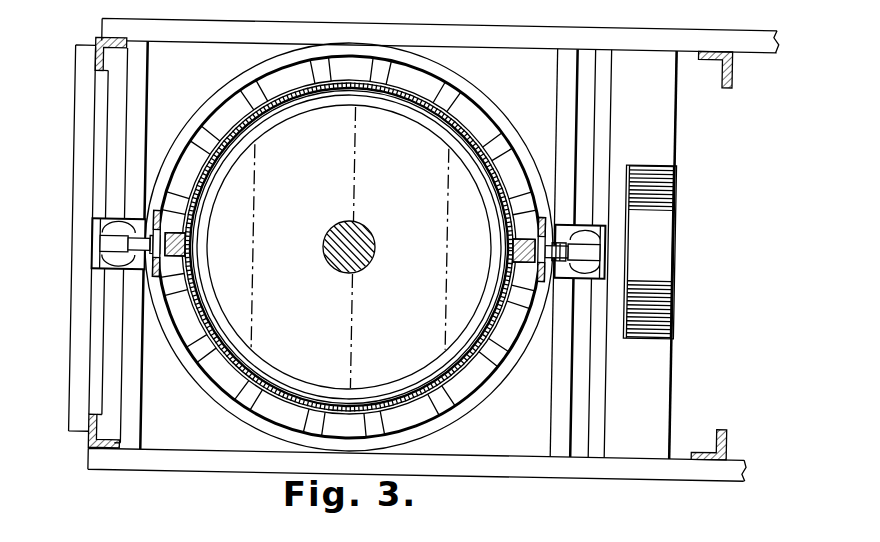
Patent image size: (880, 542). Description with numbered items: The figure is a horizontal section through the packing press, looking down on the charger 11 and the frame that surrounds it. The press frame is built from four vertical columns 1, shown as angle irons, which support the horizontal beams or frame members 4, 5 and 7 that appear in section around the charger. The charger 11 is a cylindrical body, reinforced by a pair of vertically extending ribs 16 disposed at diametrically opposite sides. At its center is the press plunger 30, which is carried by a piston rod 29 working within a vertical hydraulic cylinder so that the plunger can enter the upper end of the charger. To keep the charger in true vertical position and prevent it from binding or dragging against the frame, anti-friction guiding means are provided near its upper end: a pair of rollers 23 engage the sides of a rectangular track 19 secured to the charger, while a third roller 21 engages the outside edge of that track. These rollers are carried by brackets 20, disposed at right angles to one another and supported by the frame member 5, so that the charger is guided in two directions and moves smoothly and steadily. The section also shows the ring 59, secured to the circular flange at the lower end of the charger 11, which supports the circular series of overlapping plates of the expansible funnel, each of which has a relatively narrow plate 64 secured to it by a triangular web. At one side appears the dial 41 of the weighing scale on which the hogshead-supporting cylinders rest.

The vertical column 1 is at (731, 70).
The horizontal frame member 4 is at (507, 46).
The horizontal frame member 5 is at (77, 373).
The horizontal frame member 7 is at (135, 397).
The charger 11 is at (350, 86).
The vertically extending rib 16 is at (190, 237).
The rectangular track 19 is at (538, 249).
The bracket 20 is at (100, 227).
The third roller 21 is at (98, 250).
The roller 23 is at (156, 216).
The piston rod 29 is at (370, 232).
The press plunger 30 is at (390, 127).
The dial 41 is at (655, 163).
The ring 59 is at (490, 107).
The narrow plate 64 is at (486, 141).